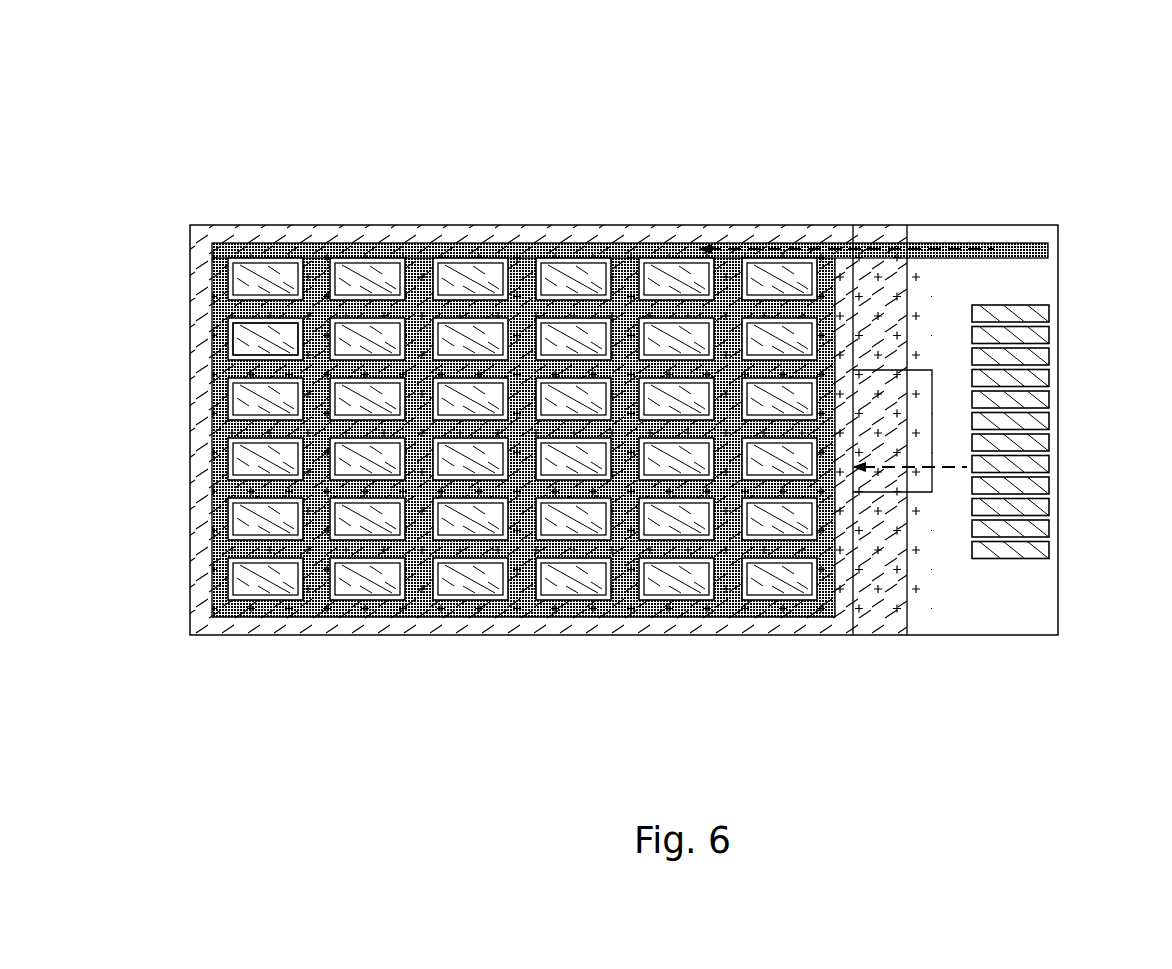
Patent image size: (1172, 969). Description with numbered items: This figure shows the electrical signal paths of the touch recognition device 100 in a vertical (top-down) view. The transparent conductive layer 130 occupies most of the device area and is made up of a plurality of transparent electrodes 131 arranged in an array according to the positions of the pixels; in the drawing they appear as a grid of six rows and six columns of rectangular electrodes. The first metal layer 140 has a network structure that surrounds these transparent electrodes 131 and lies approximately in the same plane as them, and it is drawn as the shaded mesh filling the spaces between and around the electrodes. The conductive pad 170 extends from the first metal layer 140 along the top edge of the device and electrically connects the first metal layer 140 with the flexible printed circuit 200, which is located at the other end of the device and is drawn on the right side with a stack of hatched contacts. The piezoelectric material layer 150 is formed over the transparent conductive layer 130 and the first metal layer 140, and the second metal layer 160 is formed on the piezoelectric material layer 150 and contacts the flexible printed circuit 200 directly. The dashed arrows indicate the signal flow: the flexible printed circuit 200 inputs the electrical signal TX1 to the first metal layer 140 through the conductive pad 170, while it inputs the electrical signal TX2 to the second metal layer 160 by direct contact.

The touch recognition device 100 is at (148, 61).
The transparent conductive layer 130 is at (212, 341).
The transparent electrodes 131 is at (236, 330).
The first metal layer 140 is at (216, 291).
The piezoelectric material layer 150 is at (880, 625).
The second metal layer 160 is at (832, 622).
The conductive pad 170 is at (1020, 243).
The flexible printed circuit 200 is at (1040, 608).
The electrical signal TX1 is at (953, 243).
The electrical signal TX2 is at (948, 472).